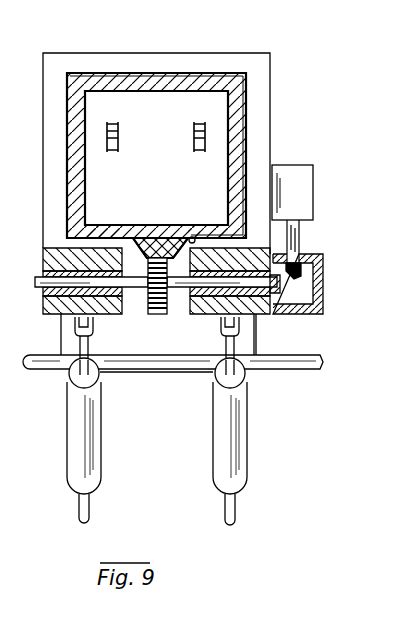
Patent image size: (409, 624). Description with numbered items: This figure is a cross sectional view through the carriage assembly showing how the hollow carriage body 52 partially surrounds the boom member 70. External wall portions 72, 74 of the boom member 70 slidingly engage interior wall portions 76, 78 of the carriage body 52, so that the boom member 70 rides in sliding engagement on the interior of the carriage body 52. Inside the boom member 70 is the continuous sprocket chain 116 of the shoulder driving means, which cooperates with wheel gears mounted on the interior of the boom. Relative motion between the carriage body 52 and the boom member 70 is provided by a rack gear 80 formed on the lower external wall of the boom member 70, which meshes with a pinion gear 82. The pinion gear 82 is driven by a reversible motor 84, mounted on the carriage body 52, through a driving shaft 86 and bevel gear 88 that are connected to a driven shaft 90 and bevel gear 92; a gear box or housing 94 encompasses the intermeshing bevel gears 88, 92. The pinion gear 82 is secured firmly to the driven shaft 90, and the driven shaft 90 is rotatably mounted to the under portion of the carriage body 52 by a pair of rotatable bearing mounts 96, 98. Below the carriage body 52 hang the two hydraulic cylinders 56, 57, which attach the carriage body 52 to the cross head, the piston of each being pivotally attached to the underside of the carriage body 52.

The carriage body 52 is at (165, 53).
The boom member 70 is at (246, 112).
The continuous sprocket chain 116 is at (193, 128).
The external wall portion 72 is at (97, 237).
The external wall portion 74 is at (224, 225).
The interior wall portion 78 is at (193, 223).
The rack gear 80 is at (190, 237).
The interior wall portion 76 is at (55, 248).
The rotatable bearing mount 96 is at (43, 302).
The pinion gear 82 is at (214, 352).
The reversible motor 84 is at (313, 181).
The driving shaft 86 is at (299, 230).
The bevel gear 88 is at (323, 276).
The gear box or housing 94 is at (323, 306).
The driven shaft 90 is at (102, 352).
The bevel gear 92 is at (278, 312).
The rotatable bearing mount 98 is at (256, 318).
The hydraulic cylinder 57 is at (101, 432).
The hydraulic cylinder 56 is at (247, 440).